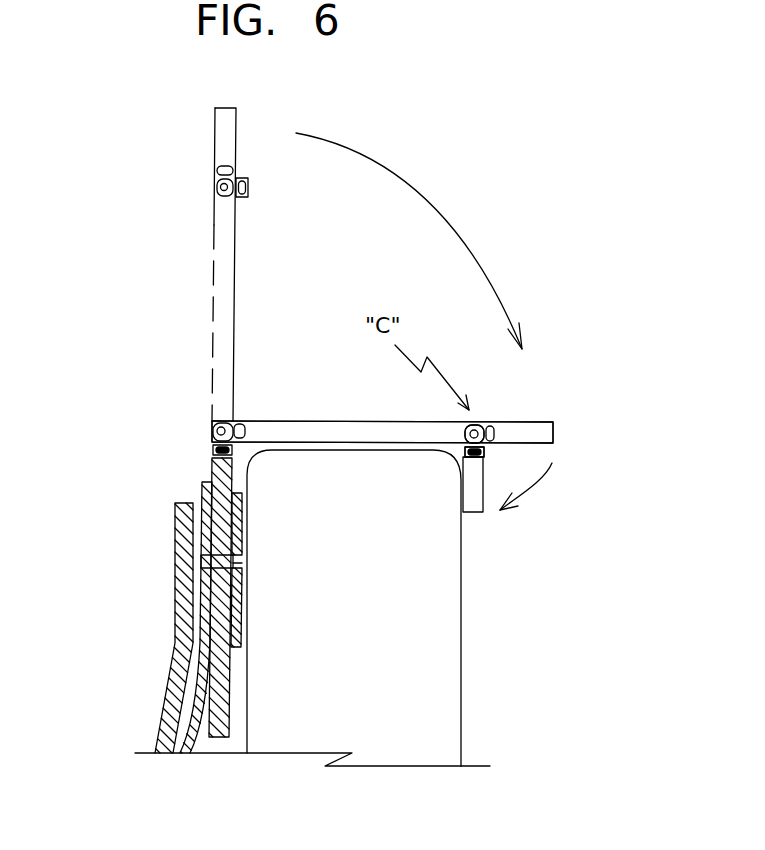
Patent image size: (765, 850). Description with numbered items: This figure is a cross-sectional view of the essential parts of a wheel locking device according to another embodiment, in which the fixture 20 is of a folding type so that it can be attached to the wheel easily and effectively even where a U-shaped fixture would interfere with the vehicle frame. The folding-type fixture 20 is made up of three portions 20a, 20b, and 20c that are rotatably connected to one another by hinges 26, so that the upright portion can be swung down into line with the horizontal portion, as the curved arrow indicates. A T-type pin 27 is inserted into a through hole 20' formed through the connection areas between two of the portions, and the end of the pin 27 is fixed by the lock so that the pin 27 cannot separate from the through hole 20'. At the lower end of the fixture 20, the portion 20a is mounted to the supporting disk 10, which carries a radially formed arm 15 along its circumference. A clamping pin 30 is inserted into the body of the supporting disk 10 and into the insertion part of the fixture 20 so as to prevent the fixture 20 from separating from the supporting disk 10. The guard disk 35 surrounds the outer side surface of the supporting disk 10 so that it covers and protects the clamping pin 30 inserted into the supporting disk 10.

The supporting disk 10 is at (188, 715).
The arm 15 is at (237, 640).
The fixture 20 is at (382, 275).
The first portion of fixture 20a is at (212, 466).
The second portion of fixture 20b is at (355, 435).
The third portion of fixture 20c is at (483, 483).
The through hole 20' is at (540, 456).
The hinge 26 is at (212, 423).
The T-type pin 27 is at (212, 447).
The clamping pin 30 is at (225, 563).
The guard disk 35 is at (175, 611).